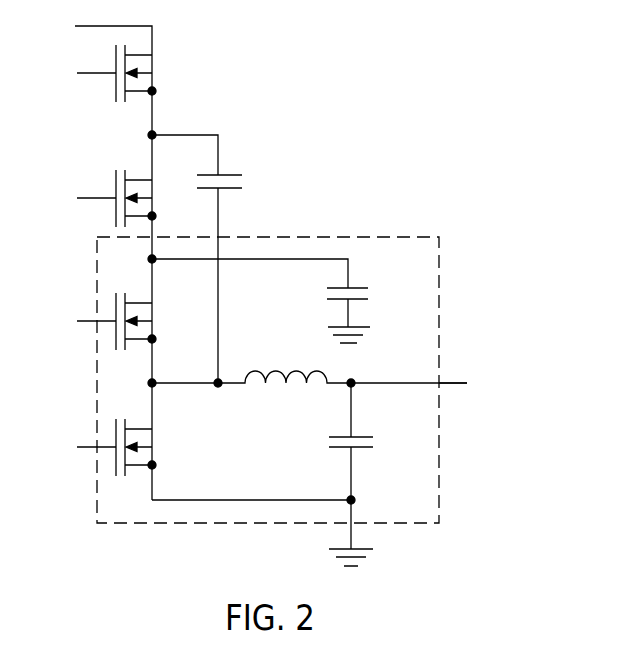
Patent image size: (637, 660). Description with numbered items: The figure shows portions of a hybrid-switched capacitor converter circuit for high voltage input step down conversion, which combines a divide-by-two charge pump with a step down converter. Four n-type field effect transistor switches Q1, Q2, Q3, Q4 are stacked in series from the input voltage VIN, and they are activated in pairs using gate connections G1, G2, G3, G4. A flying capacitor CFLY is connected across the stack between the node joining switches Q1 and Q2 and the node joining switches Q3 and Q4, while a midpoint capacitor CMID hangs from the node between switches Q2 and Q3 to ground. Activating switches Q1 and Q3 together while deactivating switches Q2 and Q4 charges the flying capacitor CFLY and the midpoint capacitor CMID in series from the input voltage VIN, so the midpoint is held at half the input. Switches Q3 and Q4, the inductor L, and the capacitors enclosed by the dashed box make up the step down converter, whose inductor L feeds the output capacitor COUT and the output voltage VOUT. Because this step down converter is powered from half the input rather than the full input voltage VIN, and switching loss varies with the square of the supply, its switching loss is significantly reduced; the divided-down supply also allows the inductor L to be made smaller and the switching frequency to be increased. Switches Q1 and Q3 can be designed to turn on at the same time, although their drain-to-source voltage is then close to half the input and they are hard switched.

The input voltage VIN is at (99, 27).
The switch Q1 is at (151, 73).
The switch Q2 is at (151, 198).
The switch Q3 is at (151, 321).
The switch Q4 is at (151, 447).
The gate connection G1 is at (83, 74).
The gate connection G2 is at (83, 199).
The gate connection G3 is at (83, 322).
The gate connection G4 is at (83, 448).
The flying capacitor CFLY is at (210, 258).
The midpoint capacitor CMID is at (286, 301).
The inductor L is at (309, 362).
The output capacitor COUT is at (289, 474).
The output voltage VOUT is at (478, 378).